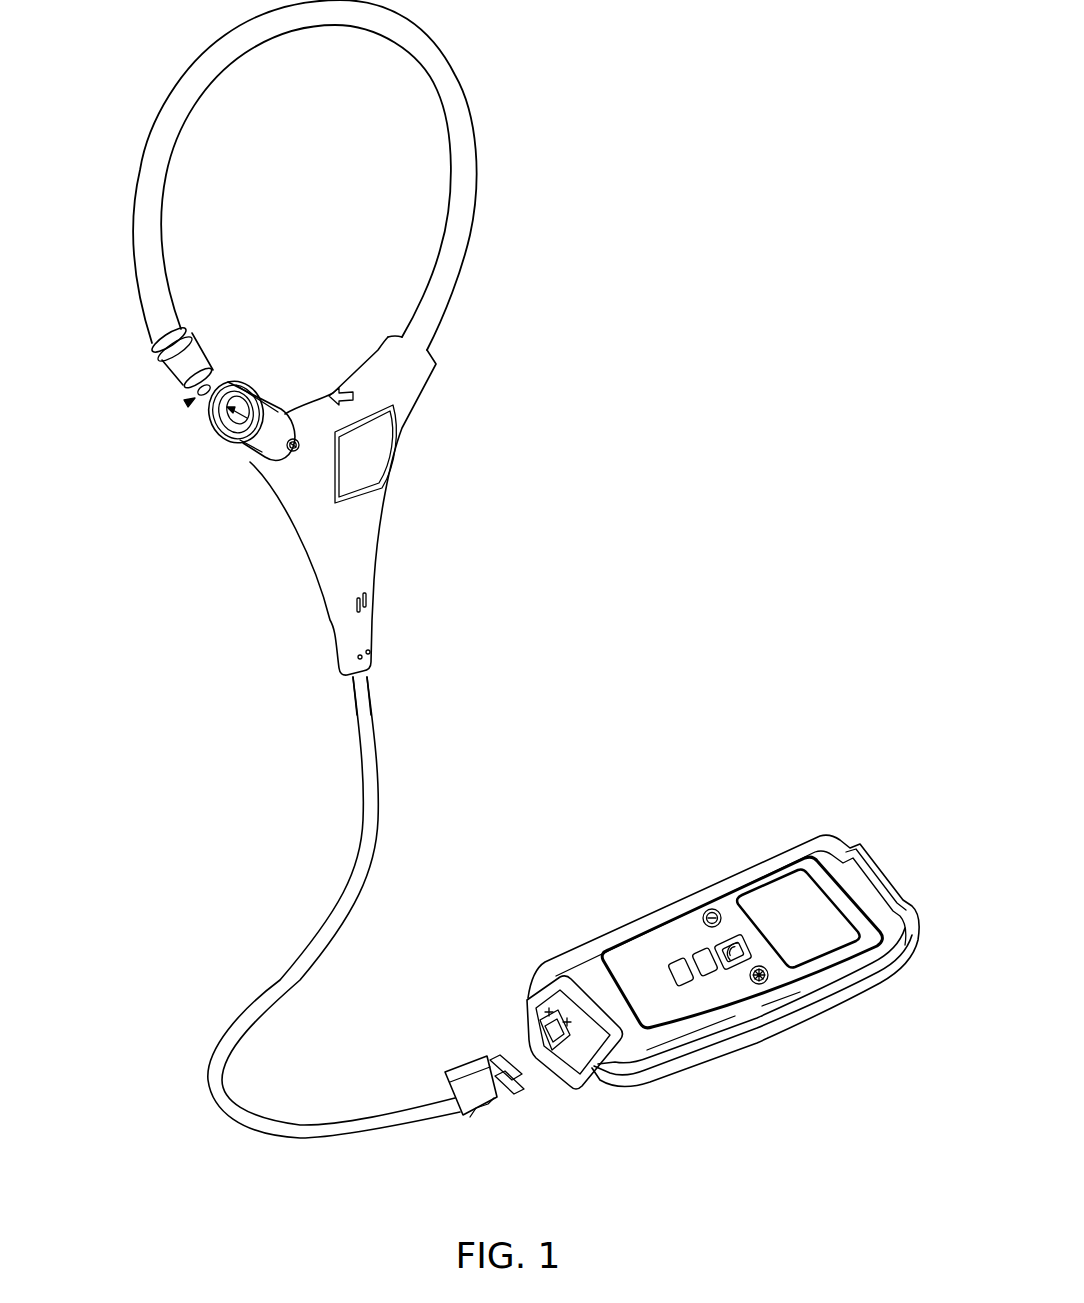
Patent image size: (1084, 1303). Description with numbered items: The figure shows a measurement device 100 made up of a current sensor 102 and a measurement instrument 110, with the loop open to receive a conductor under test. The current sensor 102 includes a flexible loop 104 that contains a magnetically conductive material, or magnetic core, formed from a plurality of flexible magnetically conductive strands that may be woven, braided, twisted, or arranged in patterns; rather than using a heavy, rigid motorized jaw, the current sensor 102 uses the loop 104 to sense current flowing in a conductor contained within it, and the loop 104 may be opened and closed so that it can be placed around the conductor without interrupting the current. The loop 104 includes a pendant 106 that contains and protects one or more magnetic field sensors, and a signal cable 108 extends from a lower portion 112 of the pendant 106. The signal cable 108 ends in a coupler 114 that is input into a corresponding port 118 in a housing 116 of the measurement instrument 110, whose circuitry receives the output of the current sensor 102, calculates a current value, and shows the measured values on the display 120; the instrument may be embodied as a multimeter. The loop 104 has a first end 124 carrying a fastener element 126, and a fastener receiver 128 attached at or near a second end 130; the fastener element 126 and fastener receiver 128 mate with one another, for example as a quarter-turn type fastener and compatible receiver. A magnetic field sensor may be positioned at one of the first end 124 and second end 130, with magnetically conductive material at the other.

The measurement device 100 is at (781, 183).
The current sensor 102 is at (255, 556).
The flexible loop 104 is at (134, 262).
The pendant 106 is at (418, 386).
The signal cable 108 is at (353, 886).
The measurement instrument 110 is at (725, 842).
The lower portion 112 is at (375, 684).
The coupler 114 is at (472, 1066).
The housing 116 is at (643, 918).
The port 118 is at (526, 996).
The display 120 is at (808, 932).
The first end 124 is at (188, 404).
The fastener element 126 is at (198, 337).
The fastener receiver 128 is at (265, 396).
The second end 130 is at (212, 423).